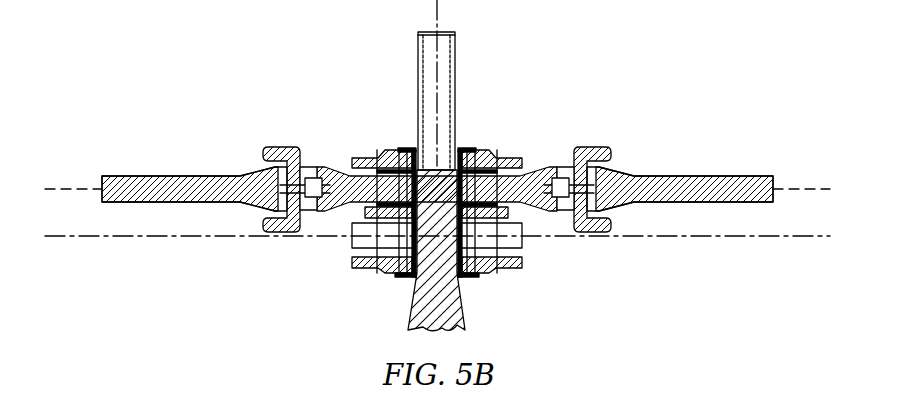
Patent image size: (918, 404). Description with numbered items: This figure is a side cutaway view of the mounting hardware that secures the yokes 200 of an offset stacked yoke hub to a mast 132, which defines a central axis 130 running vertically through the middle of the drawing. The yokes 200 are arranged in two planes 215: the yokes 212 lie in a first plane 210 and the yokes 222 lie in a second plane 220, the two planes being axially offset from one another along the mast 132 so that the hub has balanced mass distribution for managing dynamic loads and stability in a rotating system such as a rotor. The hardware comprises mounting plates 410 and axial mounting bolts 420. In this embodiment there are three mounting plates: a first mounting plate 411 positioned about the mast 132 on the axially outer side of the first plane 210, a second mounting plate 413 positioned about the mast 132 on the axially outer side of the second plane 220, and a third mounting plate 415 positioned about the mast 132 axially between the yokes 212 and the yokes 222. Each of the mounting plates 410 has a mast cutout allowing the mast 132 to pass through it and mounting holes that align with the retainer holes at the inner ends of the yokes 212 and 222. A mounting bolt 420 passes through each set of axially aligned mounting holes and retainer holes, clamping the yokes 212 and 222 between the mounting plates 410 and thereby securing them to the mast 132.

The central axis 130 is at (439, 7).
The mast 132 is at (408, 322).
The yokes 200 is at (437, 192).
The first plane 210 is at (191, 175).
The yokes in first plane 212 is at (430, 179).
The planes 215 is at (77, 190).
The second plane 220 is at (78, 237).
The yokes in second plane 222 is at (510, 240).
The mounting plates 410 is at (351, 162).
The first mounting plate 411 is at (521, 160).
The second mounting plate 413 is at (508, 268).
The third mounting plate 415 is at (508, 213).
The axial mounting bolts 420 is at (397, 273).